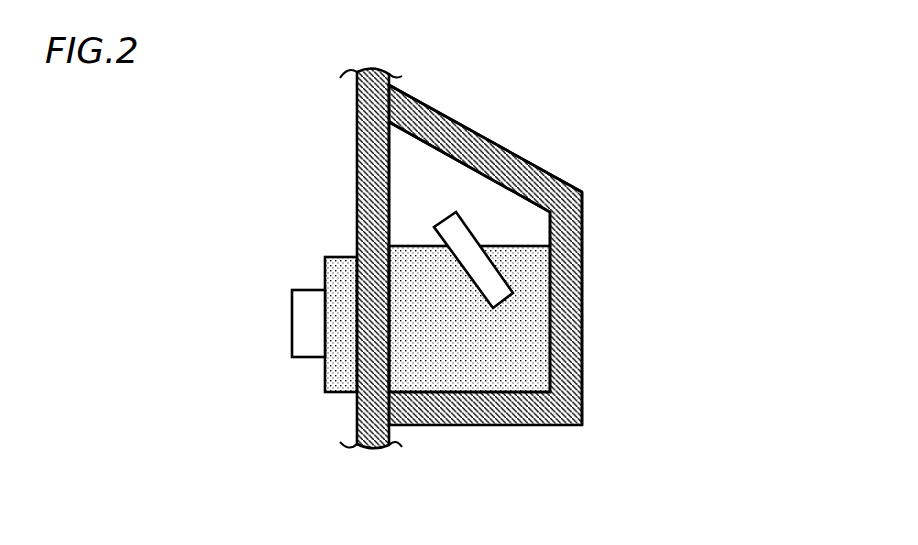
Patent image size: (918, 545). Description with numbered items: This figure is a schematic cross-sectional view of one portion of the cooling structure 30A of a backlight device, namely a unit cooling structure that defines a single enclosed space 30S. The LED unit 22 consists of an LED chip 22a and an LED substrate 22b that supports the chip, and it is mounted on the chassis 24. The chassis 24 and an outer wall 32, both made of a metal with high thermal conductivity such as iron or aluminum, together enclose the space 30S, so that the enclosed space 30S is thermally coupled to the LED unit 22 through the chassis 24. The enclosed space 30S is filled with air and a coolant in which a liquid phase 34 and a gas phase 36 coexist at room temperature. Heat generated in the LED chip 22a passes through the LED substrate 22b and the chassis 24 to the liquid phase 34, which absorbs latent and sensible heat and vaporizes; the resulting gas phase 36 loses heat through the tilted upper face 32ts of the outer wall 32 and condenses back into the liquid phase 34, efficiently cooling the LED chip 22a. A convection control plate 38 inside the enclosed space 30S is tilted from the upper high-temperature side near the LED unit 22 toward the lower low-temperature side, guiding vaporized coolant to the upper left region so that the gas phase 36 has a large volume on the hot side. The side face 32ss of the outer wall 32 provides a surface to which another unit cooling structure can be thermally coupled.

The LED unit 22 is at (271, 283).
The LED chip 22a is at (298, 343).
The LED substrate 22b is at (330, 380).
The chassis 24 is at (380, 447).
The cooling structure 30A is at (601, 236).
The enclosed space 30S is at (552, 257).
The outer wall 32 is at (531, 255).
The upper face 32ts is at (482, 133).
The side face 32ss is at (582, 360).
The liquid phase 34 is at (533, 293).
The gas phase 36 is at (530, 238).
The convection control plate 38 is at (473, 240).